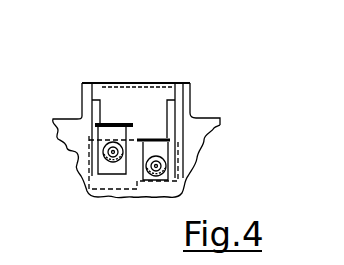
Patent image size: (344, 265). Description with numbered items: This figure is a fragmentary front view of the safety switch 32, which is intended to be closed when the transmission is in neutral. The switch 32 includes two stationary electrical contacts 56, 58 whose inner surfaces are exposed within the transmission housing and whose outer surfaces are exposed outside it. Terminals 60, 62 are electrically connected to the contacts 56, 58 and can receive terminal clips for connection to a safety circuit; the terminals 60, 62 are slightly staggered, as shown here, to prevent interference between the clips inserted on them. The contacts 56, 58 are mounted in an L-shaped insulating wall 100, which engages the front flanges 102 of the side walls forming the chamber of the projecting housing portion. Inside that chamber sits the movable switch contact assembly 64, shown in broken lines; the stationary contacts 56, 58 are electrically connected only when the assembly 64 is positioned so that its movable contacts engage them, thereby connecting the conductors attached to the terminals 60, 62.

The switch 32 is at (74, 156).
The L-shaped insulating wall 100 is at (136, 84).
The front flanges 102 is at (95, 102).
The terminal 60 is at (114, 123).
The terminal 62 is at (140, 138).
The stationary electrical contact 56 is at (108, 156).
The stationary electrical contact 58 is at (160, 165).
The movable switch contact assembly 64 is at (132, 186).